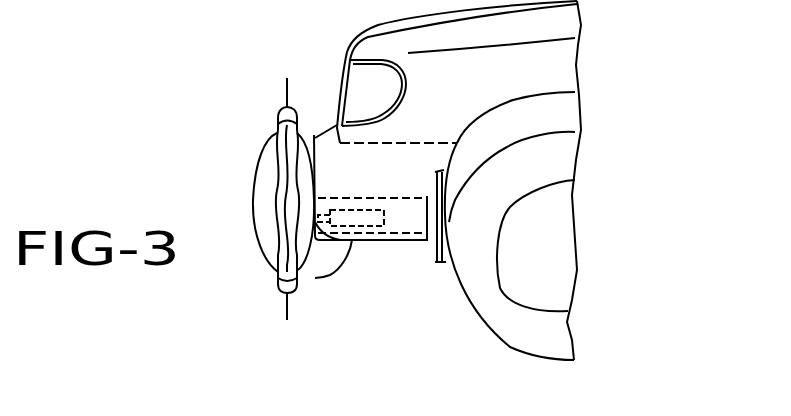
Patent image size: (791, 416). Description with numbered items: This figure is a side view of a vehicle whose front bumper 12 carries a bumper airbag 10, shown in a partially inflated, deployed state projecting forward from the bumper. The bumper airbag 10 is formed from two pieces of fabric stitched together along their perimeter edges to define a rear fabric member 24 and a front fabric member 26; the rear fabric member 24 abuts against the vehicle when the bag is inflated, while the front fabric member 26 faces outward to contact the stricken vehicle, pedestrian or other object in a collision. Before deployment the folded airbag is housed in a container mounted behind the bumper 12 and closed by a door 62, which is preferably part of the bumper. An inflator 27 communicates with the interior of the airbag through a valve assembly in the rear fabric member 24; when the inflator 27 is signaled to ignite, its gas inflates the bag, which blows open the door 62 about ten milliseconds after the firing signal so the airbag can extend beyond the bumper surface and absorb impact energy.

The bumper airbag 10 is at (256, 155).
The bumper 12 is at (403, 243).
The rear fabric member 24 is at (314, 135).
The front fabric member 26 is at (258, 216).
The inflator 27 is at (363, 226).
The door 62 is at (330, 275).